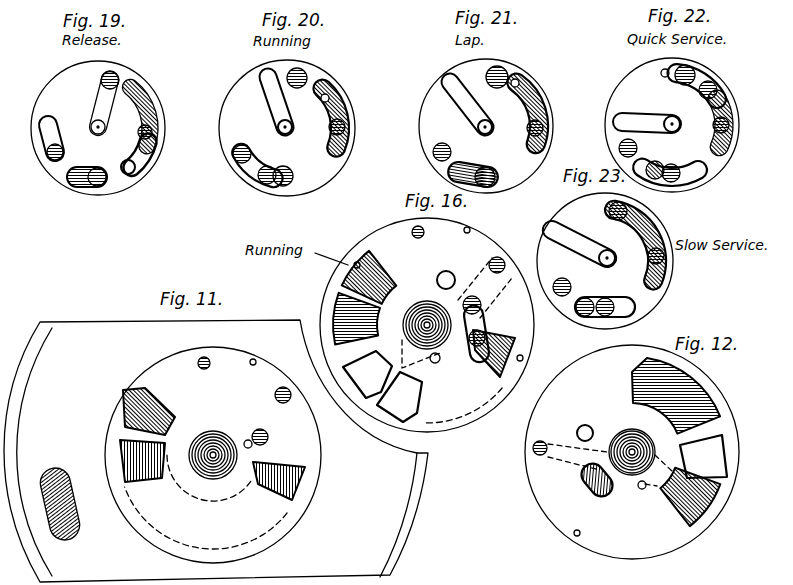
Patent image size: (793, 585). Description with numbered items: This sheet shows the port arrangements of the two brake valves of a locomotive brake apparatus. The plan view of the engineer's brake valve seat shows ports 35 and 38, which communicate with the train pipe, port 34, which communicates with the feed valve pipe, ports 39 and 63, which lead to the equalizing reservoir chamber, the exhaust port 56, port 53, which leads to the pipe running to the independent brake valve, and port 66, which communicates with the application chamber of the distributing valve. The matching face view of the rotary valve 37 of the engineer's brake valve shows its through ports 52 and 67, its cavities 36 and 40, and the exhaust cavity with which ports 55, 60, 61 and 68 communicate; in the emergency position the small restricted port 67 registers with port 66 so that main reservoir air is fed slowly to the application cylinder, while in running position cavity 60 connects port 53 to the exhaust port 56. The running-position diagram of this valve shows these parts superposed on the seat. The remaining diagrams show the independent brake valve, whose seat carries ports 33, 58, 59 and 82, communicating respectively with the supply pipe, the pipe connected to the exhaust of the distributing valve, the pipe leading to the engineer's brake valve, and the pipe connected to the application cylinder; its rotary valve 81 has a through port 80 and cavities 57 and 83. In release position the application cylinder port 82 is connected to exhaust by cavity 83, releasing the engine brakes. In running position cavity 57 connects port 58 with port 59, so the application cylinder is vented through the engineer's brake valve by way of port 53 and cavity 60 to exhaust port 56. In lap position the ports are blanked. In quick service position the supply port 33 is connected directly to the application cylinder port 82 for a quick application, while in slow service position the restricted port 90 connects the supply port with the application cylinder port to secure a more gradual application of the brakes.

In FIG. 19, the port 33 is at (145, 93).
In FIG. 20, the port 33 is at (342, 137).
In FIG. 21, the port 33 is at (543, 140).
In FIG. 22, the port 33 is at (725, 107).
In FIG. 16, the port 34 is at (357, 262).
In FIG. 11, the port 34 is at (145, 400).
In FIG. 16, the port 35 is at (336, 316).
In FIG. 11, the port 35 is at (120, 443).
In FIG. 16, the cavity 36 is at (375, 268).
In FIG. 12, the cavity 36 is at (700, 398).
In FIG. 16, the rotary valve 37 is at (490, 251).
In FIG. 12, the rotary valve 37 is at (727, 425).
In FIG. 16, the port 38 is at (512, 348).
In FIG. 11, the port 38 is at (275, 463).
In FIG. 16, the port 39 is at (481, 305).
In FIG. 11, the port 39 is at (268, 432).
In FIG. 16, the cavity 40 is at (482, 330).
In FIG. 12, the cavity 40 is at (607, 496).
In FIG. 16, the through port 52 is at (364, 397).
In FIG. 12, the through port 52 is at (722, 456).
In FIG. 16, the port 53 is at (505, 264).
In FIG. 11, the port 53 is at (275, 395).
In FIG. 12, the port 55 is at (703, 503).
In FIG. 11, the exhaust port 56 is at (212, 435).
In FIG. 19, the cavity 57 is at (44, 139).
In FIG. 20, the cavity 57 is at (252, 171).
In FIG. 21, the cavity 57 is at (450, 172).
In FIG. 22, the cavity 57 is at (690, 178).
In FIG. 19, the port 58 is at (98, 187).
In FIG. 20, the port 58 is at (282, 186).
In FIG. 21, the port 58 is at (495, 176).
In FIG. 22, the port 58 is at (671, 165).
In FIG. 23, the port 58 is at (600, 300).
In FIG. 19, the port 59 is at (50, 160).
In FIG. 20, the port 59 is at (236, 160).
In FIG. 21, the port 59 is at (433, 152).
In FIG. 22, the port 59 is at (619, 150).
In FIG. 23, the port 59 is at (570, 290).
In FIG. 12, the cavity 60 is at (533, 450).
In FIG. 12, the port 61 is at (634, 432).
In FIG. 16, the port 63 is at (425, 233).
In FIG. 11, the port 63 is at (200, 366).
In FIG. 16, the port 66 is at (470, 230).
In FIG. 11, the port 66 is at (257, 361).
In FIG. 16, the restricted port 67 is at (522, 360).
In FIG. 12, the restricted port 67 is at (577, 530).
In FIG. 16, the port 68 is at (437, 363).
In FIG. 12, the port 68 is at (643, 489).
In FIG. 19, the through port 80 is at (138, 170).
In FIG. 22, the through port 80 is at (715, 80).
In FIG. 19, the rotary valve 81 is at (101, 65).
In FIG. 20, the rotary valve 81 is at (322, 79).
In FIG. 22, the rotary valve 81 is at (722, 160).
In FIG. 23, the rotary valve 81 is at (660, 300).
In FIG. 19, the application cylinder port 82 is at (120, 78).
In FIG. 20, the application cylinder port 82 is at (305, 76).
In FIG. 21, the application cylinder port 82 is at (505, 73).
In FIG. 22, the application cylinder port 82 is at (695, 72).
In FIG. 19, the cavity 83 is at (105, 108).
In FIG. 20, the cavity 83 is at (284, 113).
In FIG. 21, the cavity 83 is at (480, 113).
In FIG. 22, the cavity 83 is at (641, 118).
In FIG. 23, the cavity 83 is at (571, 239).
In FIG. 22, the restricted port 90 is at (661, 73).